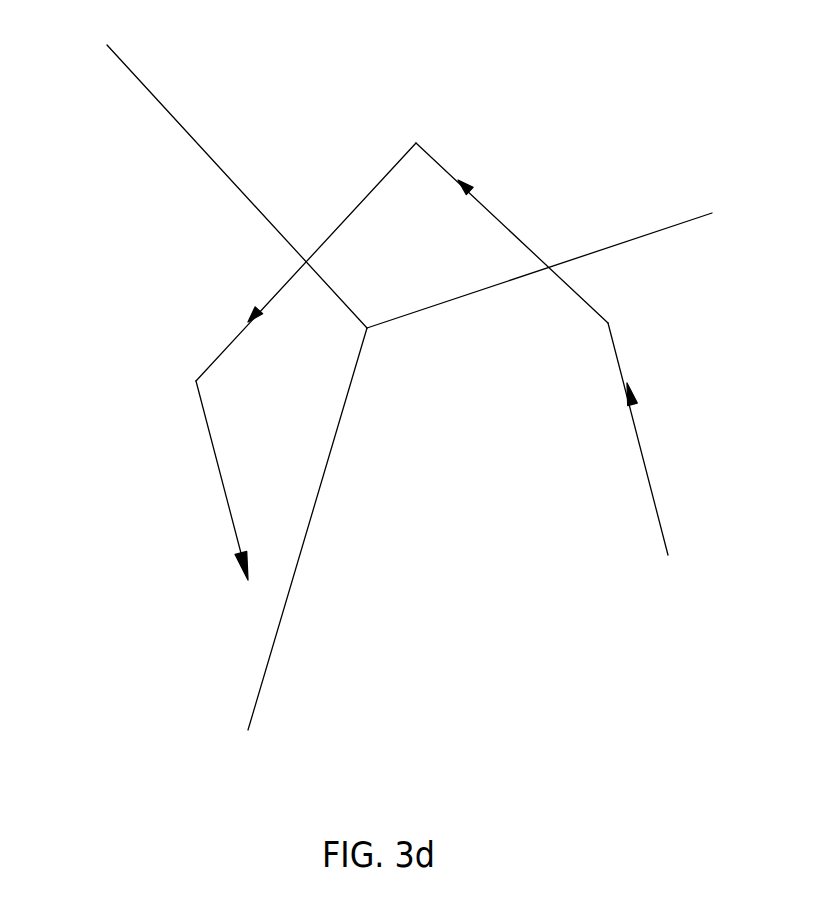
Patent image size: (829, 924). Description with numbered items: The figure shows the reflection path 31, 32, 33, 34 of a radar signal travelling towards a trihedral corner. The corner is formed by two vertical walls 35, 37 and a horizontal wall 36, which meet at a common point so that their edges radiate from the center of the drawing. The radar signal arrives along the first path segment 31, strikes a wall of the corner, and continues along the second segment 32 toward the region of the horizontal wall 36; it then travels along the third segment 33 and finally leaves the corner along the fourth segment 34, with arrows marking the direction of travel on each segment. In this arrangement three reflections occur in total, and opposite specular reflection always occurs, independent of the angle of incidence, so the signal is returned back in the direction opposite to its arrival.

The reflection path segment 31 is at (650, 473).
The reflection path segment 32 is at (513, 232).
The reflection path segment 33 is at (345, 220).
The reflection path segment 34 is at (217, 472).
The vertical wall 35 is at (413, 401).
The horizontal wall 36 is at (394, 252).
The vertical wall 37 is at (256, 386).